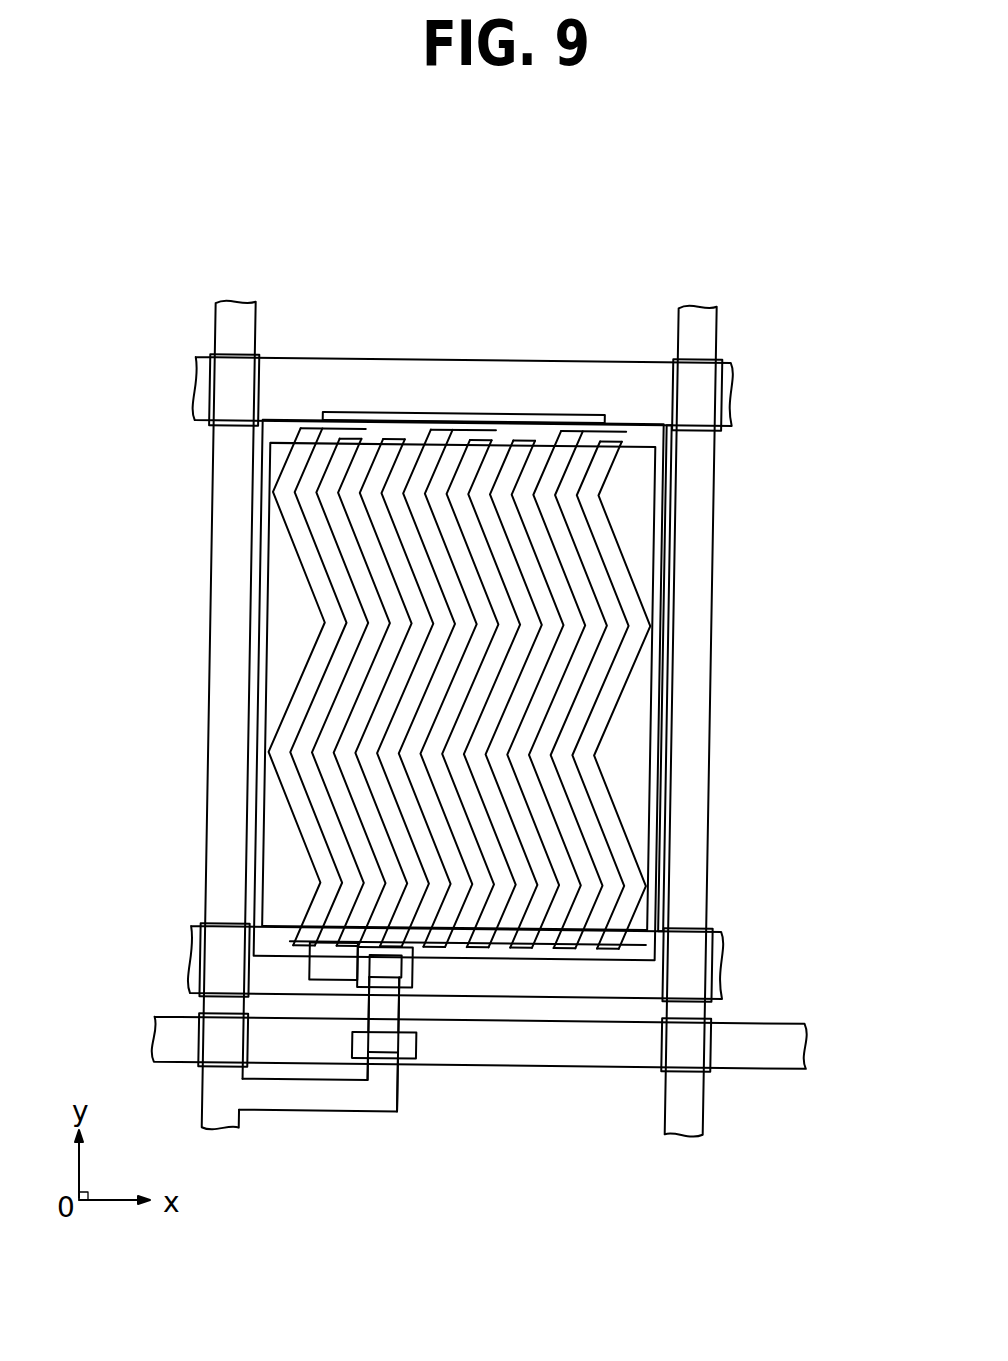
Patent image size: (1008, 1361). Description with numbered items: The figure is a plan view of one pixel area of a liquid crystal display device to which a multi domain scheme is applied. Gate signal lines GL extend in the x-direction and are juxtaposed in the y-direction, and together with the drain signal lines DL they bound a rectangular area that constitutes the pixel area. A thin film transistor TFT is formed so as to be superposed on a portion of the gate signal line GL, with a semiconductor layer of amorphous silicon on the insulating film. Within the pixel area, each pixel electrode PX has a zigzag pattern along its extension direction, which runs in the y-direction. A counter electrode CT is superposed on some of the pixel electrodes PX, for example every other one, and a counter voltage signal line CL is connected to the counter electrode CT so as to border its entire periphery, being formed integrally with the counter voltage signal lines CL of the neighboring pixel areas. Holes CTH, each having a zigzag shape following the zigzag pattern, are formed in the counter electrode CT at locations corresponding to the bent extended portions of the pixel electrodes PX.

The pixel electrode PX is at (505, 445).
The counter electrode CT is at (617, 445).
The counter voltage signal line CL is at (728, 409).
The drain signal line DL is at (232, 573).
The gate signal line GL is at (805, 1050).
The thin film transistor TFT is at (453, 1045).
The hole CTH is at (560, 690).